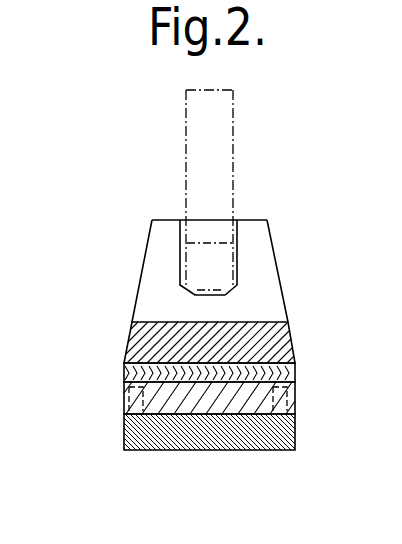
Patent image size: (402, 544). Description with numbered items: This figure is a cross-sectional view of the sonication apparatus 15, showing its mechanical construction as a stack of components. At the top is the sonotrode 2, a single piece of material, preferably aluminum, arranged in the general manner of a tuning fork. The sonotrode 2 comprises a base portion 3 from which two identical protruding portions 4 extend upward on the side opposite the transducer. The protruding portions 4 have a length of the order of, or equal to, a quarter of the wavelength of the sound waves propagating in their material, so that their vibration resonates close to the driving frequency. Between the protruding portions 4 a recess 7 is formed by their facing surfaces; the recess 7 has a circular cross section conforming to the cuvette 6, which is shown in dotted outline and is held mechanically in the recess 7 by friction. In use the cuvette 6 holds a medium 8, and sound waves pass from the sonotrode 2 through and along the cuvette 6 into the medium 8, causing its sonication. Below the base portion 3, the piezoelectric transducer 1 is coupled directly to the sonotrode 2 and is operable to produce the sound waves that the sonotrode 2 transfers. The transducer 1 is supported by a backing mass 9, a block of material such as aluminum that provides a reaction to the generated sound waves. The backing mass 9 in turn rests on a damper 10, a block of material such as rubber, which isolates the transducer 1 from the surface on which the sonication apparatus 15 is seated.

The piezoelectric transducer 1 is at (288, 373).
The sonotrode 2 is at (167, 303).
The base portion 3 is at (262, 345).
The protruding portions 4 is at (255, 238).
The cuvette 6 is at (234, 152).
The recess 7 is at (238, 265).
The medium 8 is at (197, 242).
The backing mass 9 is at (233, 400).
The damper 10 is at (158, 432).
The sonication apparatus 15 is at (84, 348).